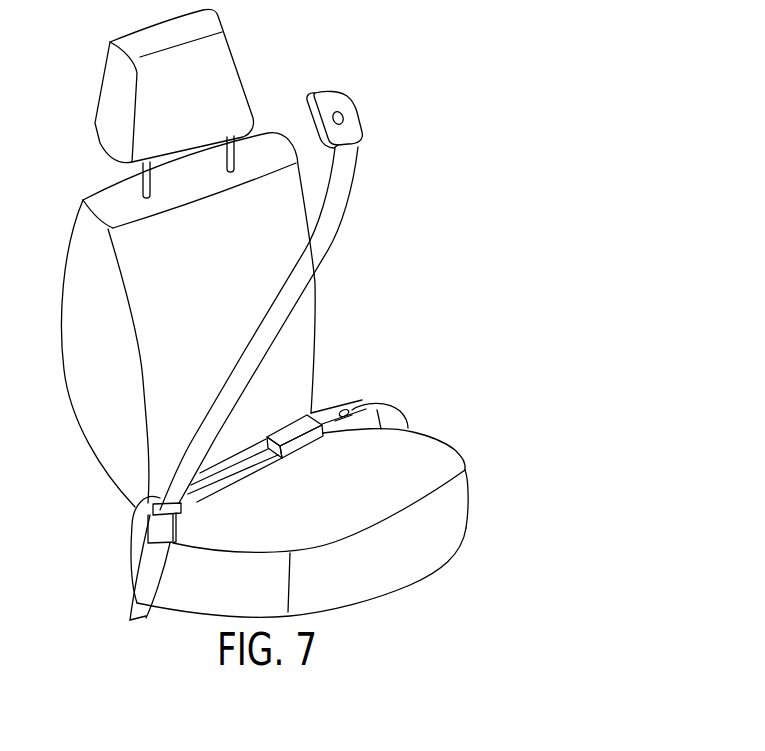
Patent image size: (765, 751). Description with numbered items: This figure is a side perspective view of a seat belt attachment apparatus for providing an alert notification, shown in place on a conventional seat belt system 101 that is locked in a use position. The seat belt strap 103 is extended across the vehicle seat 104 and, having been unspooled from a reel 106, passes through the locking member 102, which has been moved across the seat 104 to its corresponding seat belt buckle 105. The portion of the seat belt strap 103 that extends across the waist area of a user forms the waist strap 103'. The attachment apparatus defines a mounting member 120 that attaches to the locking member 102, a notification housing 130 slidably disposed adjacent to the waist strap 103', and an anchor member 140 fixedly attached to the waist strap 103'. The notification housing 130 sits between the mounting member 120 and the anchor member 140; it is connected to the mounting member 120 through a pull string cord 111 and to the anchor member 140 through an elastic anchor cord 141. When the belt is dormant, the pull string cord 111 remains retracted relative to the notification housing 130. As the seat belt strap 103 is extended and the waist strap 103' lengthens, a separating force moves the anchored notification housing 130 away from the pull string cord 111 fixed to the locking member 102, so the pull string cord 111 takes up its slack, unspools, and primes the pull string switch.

The conventional seat belt system 101 is at (357, 236).
The locking member 102 is at (140, 508).
The seat belt strap 103 is at (244, 383).
The waist strap 103' is at (278, 445).
The vehicle seat 104 is at (207, 350).
The seat belt buckle 105 is at (158, 528).
The reel 106 is at (354, 124).
The pull string cord 111 is at (233, 474).
The mounting member 120 is at (178, 511).
The notification housing 130 is at (284, 432).
The anchor member 140 is at (350, 409).
The elastic anchor cord 141 is at (344, 419).